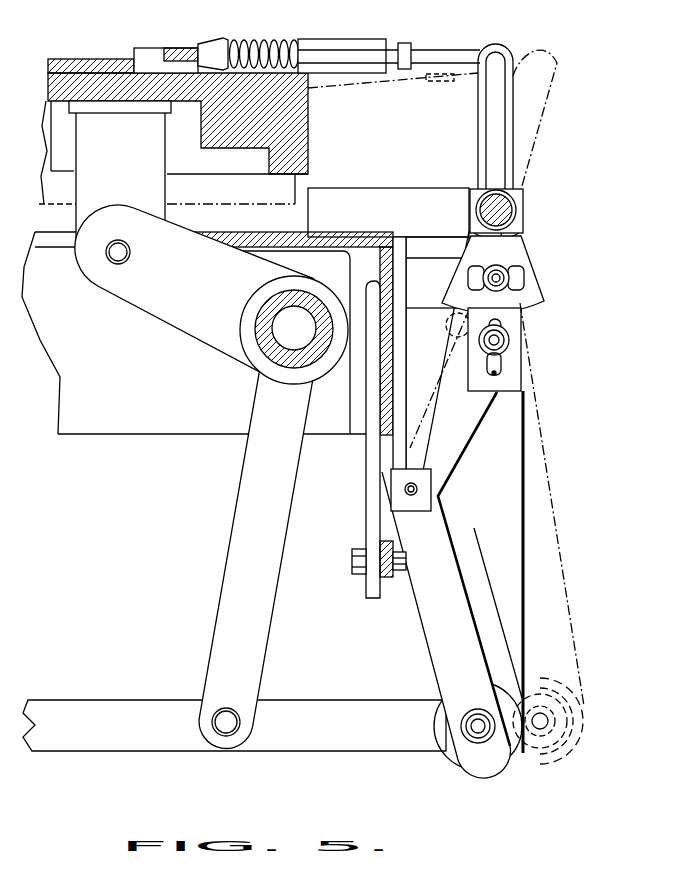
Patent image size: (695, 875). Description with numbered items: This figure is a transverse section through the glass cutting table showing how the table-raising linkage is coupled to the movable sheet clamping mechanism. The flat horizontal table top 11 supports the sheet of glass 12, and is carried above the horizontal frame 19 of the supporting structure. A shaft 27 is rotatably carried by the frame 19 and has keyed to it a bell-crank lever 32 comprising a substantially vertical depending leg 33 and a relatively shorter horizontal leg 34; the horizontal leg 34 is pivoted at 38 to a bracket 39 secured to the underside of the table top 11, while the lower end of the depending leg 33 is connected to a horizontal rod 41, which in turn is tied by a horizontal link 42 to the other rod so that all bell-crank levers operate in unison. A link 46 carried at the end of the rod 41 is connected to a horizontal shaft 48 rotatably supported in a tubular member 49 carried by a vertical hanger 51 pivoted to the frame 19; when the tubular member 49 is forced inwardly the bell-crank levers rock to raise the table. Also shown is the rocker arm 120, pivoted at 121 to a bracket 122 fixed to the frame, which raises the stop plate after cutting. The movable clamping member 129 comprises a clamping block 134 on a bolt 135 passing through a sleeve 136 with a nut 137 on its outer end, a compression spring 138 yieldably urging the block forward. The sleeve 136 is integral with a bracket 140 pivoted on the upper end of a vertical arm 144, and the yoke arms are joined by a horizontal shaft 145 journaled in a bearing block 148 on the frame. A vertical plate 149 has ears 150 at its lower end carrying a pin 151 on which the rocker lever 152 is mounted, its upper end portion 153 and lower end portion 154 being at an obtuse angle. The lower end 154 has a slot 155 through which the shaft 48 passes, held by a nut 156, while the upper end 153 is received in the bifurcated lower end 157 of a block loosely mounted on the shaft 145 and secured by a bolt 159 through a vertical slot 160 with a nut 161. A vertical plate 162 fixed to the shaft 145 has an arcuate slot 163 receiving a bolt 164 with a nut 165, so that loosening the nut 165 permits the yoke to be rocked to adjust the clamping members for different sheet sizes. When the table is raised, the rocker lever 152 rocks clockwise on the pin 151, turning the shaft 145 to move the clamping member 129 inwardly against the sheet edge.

The table top 11 is at (48, 73).
The sheet of glass 12 is at (88, 57).
The horizontal frame 19 is at (77, 428).
The shaft 27 is at (248, 336).
The bell-crank lever 32 is at (303, 282).
The depending leg 33 is at (242, 463).
The horizontal leg 34 is at (136, 287).
The pivot 38 is at (106, 246).
The bracket 39 is at (142, 152).
The rod 41 is at (215, 725).
The horizontal link 42 is at (122, 695).
The link 46 is at (307, 732).
The horizontal shaft 48 is at (543, 714).
The tubular member 49 is at (505, 753).
The vertical hanger 51 is at (499, 488).
The rocker arm 120 is at (386, 582).
The pivot 121 is at (344, 552).
The bracket 122 is at (369, 377).
The clamping member 129 is at (304, 26).
The clamping block 134 is at (139, 52).
The bolt 135 is at (273, 20).
The sleeve 136 is at (347, 33).
The nut 137 is at (397, 35).
The compression spring 138 is at (232, 33).
The bracket 140 is at (440, 50).
The vertical arm 144 is at (491, 98).
The horizontal shaft 145 is at (514, 187).
The bearing block 148 is at (455, 178).
The vertical plate 149 is at (387, 436).
The ears 150 is at (383, 497).
The pin 151 is at (397, 482).
The rocker lever 152 is at (422, 606).
The upper end portion 153 is at (459, 415).
The lower end portion 154 is at (445, 567).
The slot 155 is at (515, 686).
The nut 156 is at (462, 703).
The bifurcated lower end 157 is at (509, 361).
The bolt 159 is at (496, 318).
The vertical slot 160 is at (478, 385).
The nut 161 is at (502, 333).
The vertical plate 162 is at (528, 286).
The arcuate slot 163 is at (508, 261).
The bolt 164 is at (504, 255).
The nut 165 is at (452, 243).